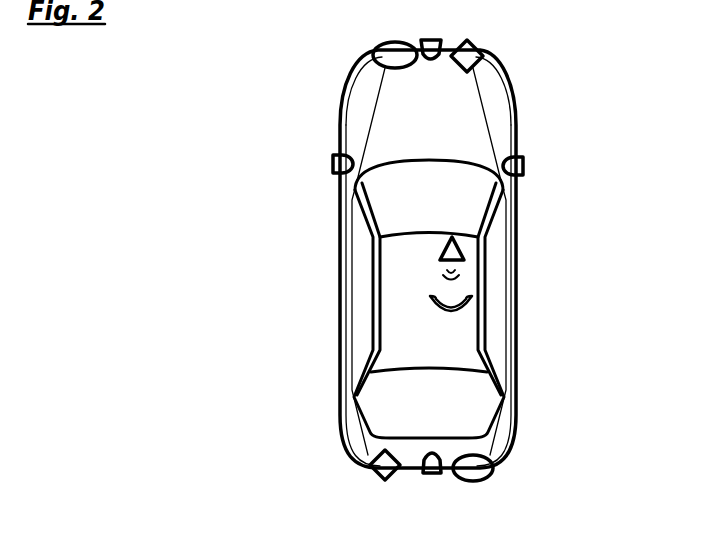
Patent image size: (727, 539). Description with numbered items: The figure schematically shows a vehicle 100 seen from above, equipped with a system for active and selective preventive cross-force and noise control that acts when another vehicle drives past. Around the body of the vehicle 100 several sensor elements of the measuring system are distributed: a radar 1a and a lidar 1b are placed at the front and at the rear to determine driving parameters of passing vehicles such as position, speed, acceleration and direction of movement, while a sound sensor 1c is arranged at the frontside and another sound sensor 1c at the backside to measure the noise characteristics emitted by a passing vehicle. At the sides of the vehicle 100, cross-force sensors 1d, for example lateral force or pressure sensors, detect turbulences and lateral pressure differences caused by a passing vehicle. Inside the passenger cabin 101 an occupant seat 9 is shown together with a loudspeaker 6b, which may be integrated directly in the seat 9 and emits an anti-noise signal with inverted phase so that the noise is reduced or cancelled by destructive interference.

The vehicle 100 is at (272, 141).
The passenger cabin 101 is at (409, 335).
The radar 1a is at (385, 42).
The lidar 1b is at (469, 39).
The sound sensor 1c is at (432, 38).
The cross-force sensor 1d is at (333, 165).
The loudspeaker 6b is at (466, 250).
The occupant seat 9 is at (473, 303).